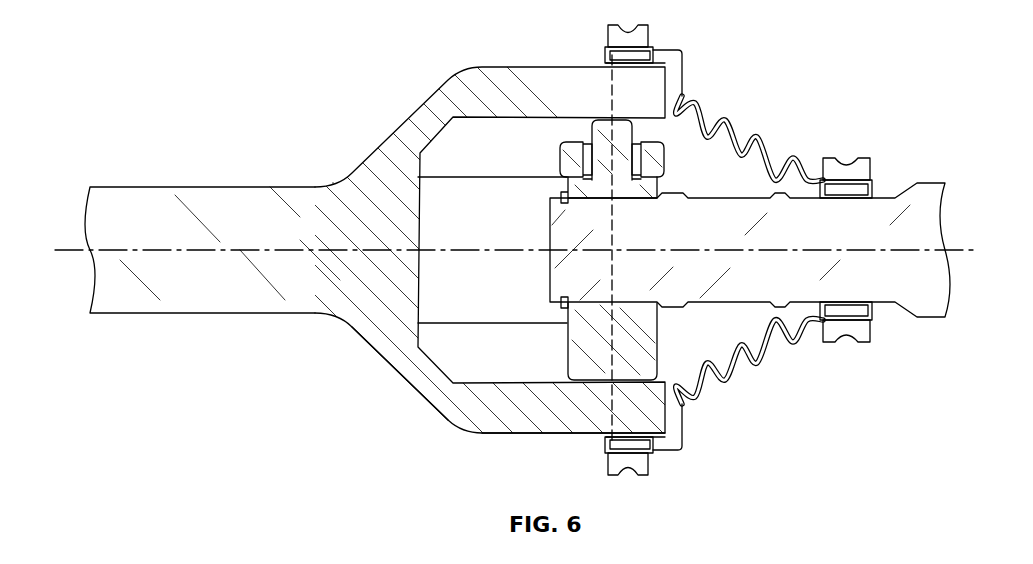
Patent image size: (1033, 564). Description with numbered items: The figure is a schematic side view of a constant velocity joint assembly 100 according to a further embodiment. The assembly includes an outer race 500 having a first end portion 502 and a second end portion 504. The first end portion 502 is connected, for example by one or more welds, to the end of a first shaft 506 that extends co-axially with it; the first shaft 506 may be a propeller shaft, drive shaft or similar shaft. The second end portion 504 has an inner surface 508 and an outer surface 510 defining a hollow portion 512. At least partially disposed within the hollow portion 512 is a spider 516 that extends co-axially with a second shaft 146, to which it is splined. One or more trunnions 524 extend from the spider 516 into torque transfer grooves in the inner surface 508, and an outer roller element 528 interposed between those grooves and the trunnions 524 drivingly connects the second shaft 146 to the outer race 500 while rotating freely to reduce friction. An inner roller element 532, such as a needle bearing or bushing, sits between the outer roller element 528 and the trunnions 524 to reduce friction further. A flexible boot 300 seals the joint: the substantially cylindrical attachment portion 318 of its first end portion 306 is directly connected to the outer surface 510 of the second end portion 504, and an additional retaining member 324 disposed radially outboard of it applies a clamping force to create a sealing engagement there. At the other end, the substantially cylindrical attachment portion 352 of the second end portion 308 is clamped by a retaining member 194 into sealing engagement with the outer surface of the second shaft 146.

The constant velocity joint assembly 100 is at (290, 380).
The second shaft 146 is at (758, 238).
The retaining member 194 is at (865, 160).
The flexible boot 300 is at (730, 382).
The first end portion 306 is at (683, 432).
The second end portion 308 is at (807, 328).
The substantially cylindrical attachment portion 318 is at (627, 66).
The additional retaining member 324 is at (607, 33).
The substantially cylindrical attachment portion 352 is at (848, 197).
The outer race 500 is at (390, 130).
The first end portion 502 is at (333, 182).
The second end portion 504 is at (510, 66).
The first shaft 506 is at (221, 228).
The inner surface 508 is at (460, 362).
The outer surface 510 is at (503, 433).
The hollow portion 512 is at (457, 360).
The spider 516 is at (575, 347).
The trunnions 524 is at (625, 127).
The outer roller element 528 is at (568, 155).
The inner roller element 532 is at (562, 160).